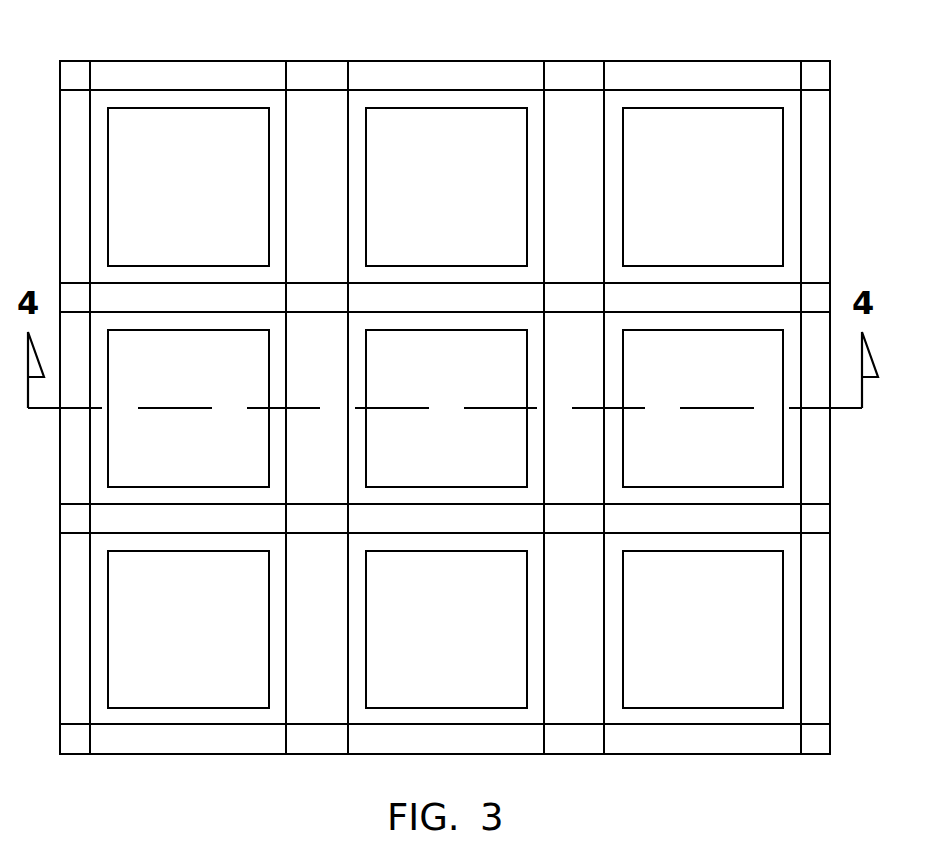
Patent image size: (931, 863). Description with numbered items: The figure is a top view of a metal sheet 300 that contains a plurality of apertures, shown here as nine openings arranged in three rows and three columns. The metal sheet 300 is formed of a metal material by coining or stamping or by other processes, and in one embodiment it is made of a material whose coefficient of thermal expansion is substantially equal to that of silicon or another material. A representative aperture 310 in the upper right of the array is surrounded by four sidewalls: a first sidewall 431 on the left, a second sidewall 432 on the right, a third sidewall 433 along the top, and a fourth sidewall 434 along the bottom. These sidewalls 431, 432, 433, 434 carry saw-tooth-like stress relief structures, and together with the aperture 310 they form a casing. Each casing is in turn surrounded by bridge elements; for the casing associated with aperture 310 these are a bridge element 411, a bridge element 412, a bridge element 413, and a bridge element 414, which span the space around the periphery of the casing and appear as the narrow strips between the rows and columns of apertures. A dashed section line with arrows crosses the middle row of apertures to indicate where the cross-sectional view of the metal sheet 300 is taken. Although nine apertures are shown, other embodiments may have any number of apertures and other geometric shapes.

The metal sheet 300 is at (212, 60).
The aperture 310 is at (763, 143).
The bridge element 411 is at (572, 102).
The bridge element 412 is at (817, 228).
The bridge element 413 is at (672, 300).
The bridge element 414 is at (725, 78).
The first sidewall 431 is at (615, 183).
The second sidewall 432 is at (790, 180).
The third sidewall 433 is at (693, 90).
The fourth sidewall 434 is at (712, 279).